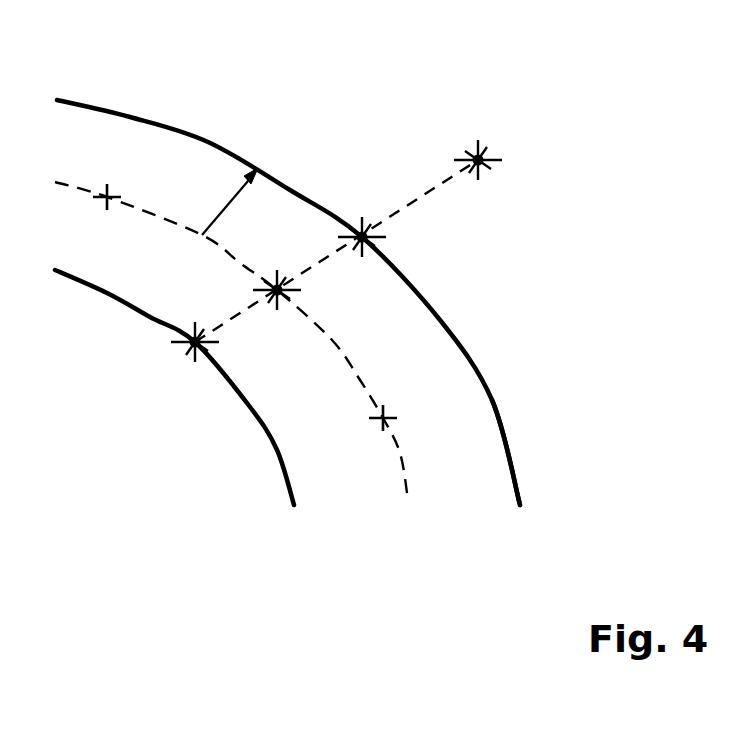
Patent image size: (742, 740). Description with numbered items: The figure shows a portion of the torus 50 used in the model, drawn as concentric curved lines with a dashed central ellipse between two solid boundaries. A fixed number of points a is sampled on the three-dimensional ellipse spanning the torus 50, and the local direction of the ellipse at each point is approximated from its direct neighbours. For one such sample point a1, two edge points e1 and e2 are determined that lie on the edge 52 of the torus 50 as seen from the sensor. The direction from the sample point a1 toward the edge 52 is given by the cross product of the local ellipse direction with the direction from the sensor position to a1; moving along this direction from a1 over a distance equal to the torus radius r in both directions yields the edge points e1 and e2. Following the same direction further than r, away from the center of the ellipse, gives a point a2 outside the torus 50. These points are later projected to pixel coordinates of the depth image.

The torus 50 is at (503, 427).
The edge 52 is at (208, 142).
The torus radius r is at (214, 219).
The edge point e1 is at (181, 349).
The edge point e2 is at (353, 228).
The sample point a1 is at (284, 300).
The point outside the torus a2 is at (478, 170).